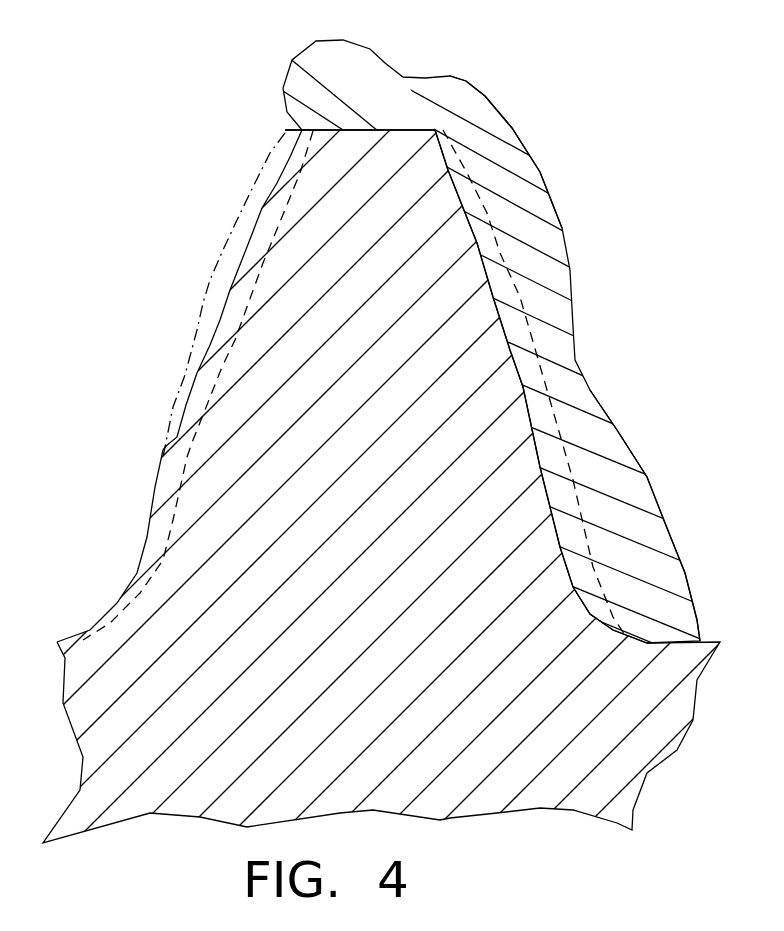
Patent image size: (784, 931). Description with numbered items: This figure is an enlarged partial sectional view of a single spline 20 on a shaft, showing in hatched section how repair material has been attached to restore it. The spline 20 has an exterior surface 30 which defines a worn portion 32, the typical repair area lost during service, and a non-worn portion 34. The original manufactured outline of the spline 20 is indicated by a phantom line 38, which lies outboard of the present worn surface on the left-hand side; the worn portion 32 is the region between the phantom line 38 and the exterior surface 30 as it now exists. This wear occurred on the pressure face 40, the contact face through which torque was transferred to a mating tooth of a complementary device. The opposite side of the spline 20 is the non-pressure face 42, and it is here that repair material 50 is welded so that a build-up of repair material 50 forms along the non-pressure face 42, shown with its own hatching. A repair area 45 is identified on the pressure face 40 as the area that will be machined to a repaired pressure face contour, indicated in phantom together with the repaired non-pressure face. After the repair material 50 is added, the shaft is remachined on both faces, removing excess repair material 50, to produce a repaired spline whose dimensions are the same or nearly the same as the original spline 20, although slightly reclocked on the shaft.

The spline 20 is at (663, 92).
The exterior surface 30 is at (381, 128).
The worn portion 32 is at (223, 280).
The non-worn portion 34 is at (507, 375).
The phantom line 38 is at (197, 327).
The pressure face 40 is at (157, 477).
The non-pressure face 42 is at (493, 285).
The repair area 45 is at (165, 453).
The repair material 50 is at (470, 113).